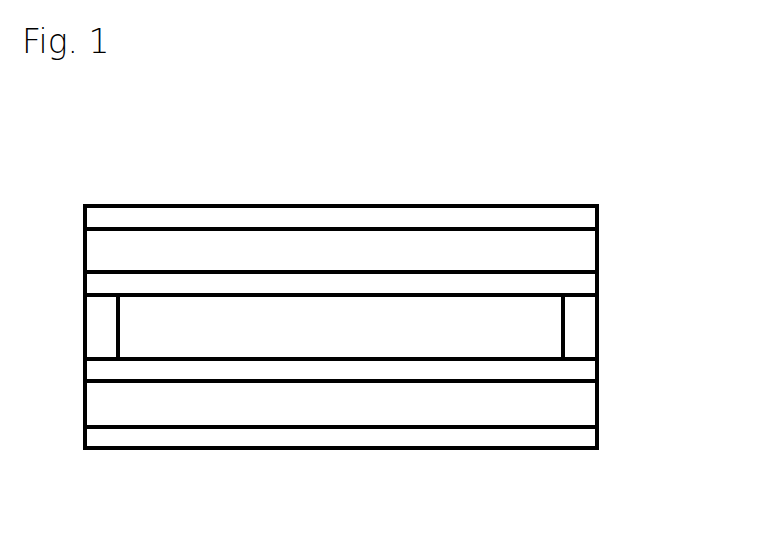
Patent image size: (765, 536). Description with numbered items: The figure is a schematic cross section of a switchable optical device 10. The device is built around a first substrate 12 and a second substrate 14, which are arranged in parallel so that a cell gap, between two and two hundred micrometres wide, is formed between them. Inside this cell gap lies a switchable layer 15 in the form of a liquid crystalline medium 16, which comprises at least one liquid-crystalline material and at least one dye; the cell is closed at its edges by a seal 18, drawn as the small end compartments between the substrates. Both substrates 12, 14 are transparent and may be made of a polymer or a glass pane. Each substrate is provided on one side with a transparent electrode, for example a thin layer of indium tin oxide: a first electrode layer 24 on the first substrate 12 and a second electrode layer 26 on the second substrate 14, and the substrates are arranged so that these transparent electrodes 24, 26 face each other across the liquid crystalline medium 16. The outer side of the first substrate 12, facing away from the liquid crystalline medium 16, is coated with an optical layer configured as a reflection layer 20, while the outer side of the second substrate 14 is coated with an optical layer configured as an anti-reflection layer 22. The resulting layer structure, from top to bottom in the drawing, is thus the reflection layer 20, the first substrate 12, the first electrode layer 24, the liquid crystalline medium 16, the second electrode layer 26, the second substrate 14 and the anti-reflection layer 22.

The switchable optical device 10 is at (581, 158).
The first substrate 12 is at (258, 250).
The second substrate 14 is at (102, 404).
The switchable layer 15 is at (385, 323).
The liquid crystalline medium 16 is at (552, 339).
The seal 18 is at (102, 333).
The reflection layer 20 is at (428, 218).
The anti-reflection layer 22 is at (400, 438).
The first electrode layer 24 is at (334, 284).
The second electrode layer 26 is at (563, 369).